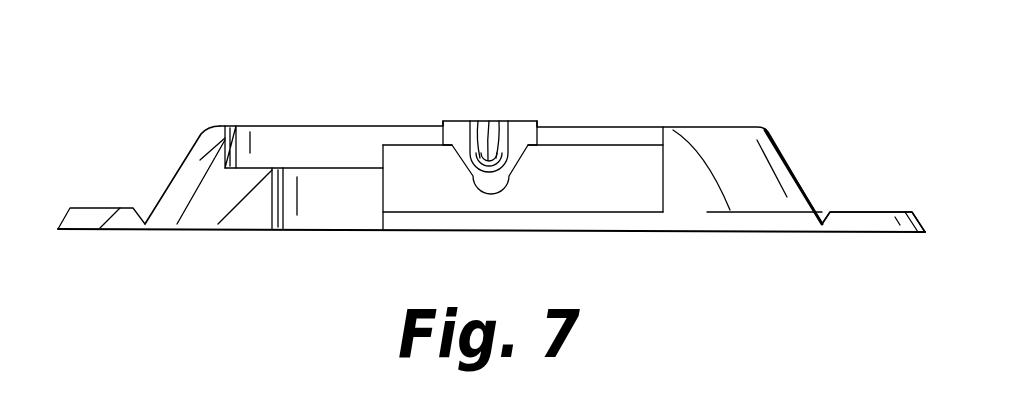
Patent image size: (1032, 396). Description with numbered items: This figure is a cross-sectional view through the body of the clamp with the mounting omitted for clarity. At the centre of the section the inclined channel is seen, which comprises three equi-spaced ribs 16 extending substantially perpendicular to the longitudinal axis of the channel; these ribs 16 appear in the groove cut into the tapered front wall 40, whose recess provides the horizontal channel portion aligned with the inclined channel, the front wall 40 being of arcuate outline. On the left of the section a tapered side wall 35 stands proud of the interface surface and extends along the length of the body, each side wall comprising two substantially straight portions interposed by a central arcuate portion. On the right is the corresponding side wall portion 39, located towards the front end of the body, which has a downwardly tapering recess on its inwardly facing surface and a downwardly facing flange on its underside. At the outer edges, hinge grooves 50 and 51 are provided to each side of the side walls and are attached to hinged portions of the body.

The rib 16 is at (477, 122).
The tapered side wall 35 is at (203, 160).
The side wall portion 39 is at (690, 175).
The tapered front wall 40 is at (623, 165).
The hinge groove 50 is at (148, 220).
The hinge groove 51 is at (825, 213).